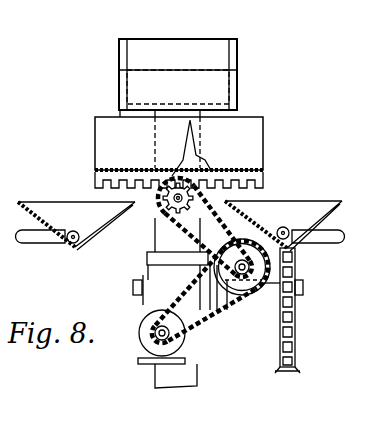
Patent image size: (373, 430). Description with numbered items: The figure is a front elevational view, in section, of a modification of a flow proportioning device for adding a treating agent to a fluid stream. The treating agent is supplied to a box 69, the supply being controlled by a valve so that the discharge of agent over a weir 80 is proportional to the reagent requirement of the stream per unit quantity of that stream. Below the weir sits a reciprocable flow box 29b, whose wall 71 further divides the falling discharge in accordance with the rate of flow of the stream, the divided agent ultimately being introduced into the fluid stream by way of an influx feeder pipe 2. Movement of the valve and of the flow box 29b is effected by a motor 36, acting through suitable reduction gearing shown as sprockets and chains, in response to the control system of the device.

The box 69 is at (238, 53).
The weir 80 is at (238, 90).
The reciprocable flow box 29b is at (256, 137).
The wall 71 is at (197, 143).
The influx feeder pipe 2 is at (322, 240).
The motor 36 is at (143, 345).